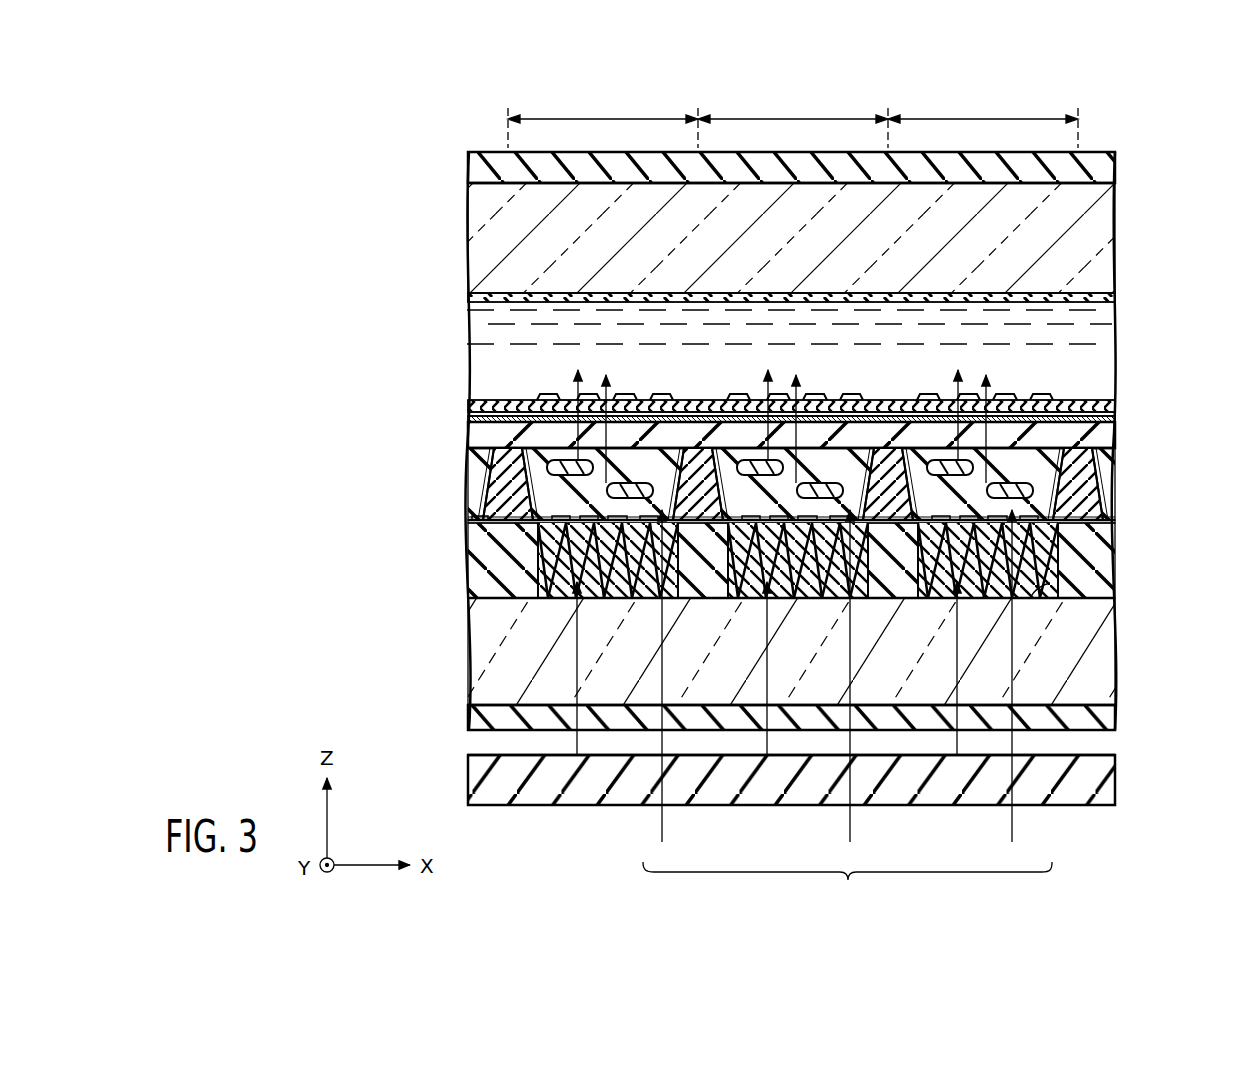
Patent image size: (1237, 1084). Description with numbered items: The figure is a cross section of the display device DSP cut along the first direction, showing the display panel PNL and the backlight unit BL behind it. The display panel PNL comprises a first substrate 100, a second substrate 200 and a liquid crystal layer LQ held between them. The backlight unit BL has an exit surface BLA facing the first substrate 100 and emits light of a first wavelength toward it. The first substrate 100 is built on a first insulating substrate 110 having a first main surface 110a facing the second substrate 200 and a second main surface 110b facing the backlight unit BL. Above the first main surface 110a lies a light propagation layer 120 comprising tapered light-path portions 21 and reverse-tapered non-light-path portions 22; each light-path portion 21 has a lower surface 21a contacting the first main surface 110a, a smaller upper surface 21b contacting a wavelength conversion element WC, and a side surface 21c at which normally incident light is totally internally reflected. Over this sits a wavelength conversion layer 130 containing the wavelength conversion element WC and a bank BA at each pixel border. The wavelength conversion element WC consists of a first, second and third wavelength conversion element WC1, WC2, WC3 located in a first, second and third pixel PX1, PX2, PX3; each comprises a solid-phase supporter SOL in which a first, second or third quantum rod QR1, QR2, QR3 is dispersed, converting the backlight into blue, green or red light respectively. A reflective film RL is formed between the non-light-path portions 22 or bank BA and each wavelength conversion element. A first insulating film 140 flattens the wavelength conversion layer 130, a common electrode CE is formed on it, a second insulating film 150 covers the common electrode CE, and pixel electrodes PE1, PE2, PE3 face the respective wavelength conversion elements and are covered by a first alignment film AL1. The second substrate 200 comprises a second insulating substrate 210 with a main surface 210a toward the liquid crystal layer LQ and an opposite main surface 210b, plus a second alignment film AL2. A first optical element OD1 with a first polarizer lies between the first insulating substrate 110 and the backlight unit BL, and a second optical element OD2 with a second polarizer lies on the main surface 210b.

The display device DSP is at (1168, 140).
The display panel PNL is at (342, 406).
The first substrate 100 is at (360, 600).
The second substrate 200 is at (460, 246).
The first insulating substrate 110 is at (1102, 666).
The first main surface 110a is at (472, 592).
The second main surface 110b is at (472, 711).
The second insulating substrate 210 is at (1100, 243).
The main surface of the second insulating substrate 210a is at (482, 306).
The main surface 210b is at (478, 173).
The light propagation layer 120 is at (460, 571).
The wavelength conversion layer 130 is at (460, 464).
The first insulating film 140 is at (1105, 435).
The second insulating film 150 is at (1110, 413).
The light-path portion 21 is at (560, 600).
The lower surface 21a is at (1052, 600).
The upper surface 21b is at (1100, 528).
The side surface 21c is at (1055, 567).
The non-light-path portion 22 is at (533, 600).
The first optical element OD1 is at (1102, 716).
The second optical element OD2 is at (1102, 166).
The first alignment film AL1 is at (1095, 405).
The second alignment film AL2 is at (1105, 297).
The common electrode CE is at (1108, 419).
The pixel electrode PE1 is at (548, 394).
The pixel electrode PE2 is at (810, 394).
The pixel electrode PE3 is at (997, 394).
The first quantum rod QR1 is at (570, 460).
The second quantum rod QR2 is at (816, 483).
The third quantum rod QR3 is at (1004, 483).
The solid-phase supporter SOL is at (676, 517).
The reflective film RL is at (652, 512).
The bank BA is at (1082, 497).
The liquid crystal layer LQ is at (460, 372).
The backlight unit BL is at (1108, 776).
The exit surface BLA is at (1106, 741).
The first pixel PX1 is at (603, 119).
The second pixel PX2 is at (793, 119).
The third pixel PX3 is at (983, 119).
The first wavelength conversion element WC1 is at (668, 687).
The second wavelength conversion element WC2 is at (856, 687).
The third wavelength conversion element WC3 is at (1018, 687).
The wavelength conversion element WC is at (847, 883).